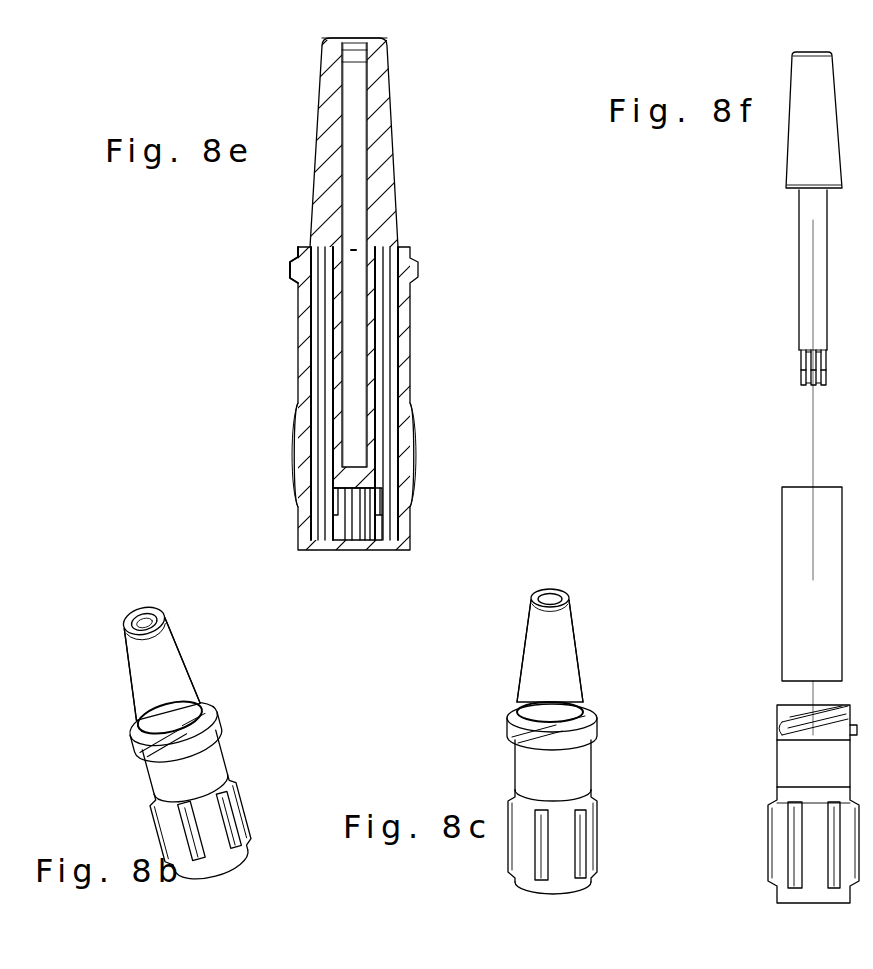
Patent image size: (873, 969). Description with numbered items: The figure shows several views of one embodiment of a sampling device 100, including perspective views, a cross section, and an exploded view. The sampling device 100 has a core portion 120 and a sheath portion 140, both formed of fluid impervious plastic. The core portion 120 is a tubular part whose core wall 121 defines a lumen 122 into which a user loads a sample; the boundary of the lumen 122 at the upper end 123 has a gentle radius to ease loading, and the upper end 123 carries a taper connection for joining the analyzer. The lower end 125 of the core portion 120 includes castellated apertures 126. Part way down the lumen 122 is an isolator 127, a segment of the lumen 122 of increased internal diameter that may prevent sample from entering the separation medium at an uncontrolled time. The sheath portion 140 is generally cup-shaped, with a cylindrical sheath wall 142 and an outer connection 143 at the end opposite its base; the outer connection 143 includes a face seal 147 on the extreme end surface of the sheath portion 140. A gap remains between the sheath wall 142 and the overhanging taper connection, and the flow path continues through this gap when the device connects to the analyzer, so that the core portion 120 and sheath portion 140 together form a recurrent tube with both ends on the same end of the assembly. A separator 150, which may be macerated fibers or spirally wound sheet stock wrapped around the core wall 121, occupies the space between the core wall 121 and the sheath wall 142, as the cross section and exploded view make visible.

In FIG. 8B, the sampling device 100 is at (208, 662).
In FIG. 8F, the core portion 120 is at (780, 224).
In FIG. 8E, the core wall 121 is at (372, 358).
In FIG. 8E, the lumen 122 is at (353, 433).
In FIG. 8C, the upper end 123 is at (551, 592).
In FIG. 8F, the lower end 125 is at (800, 378).
In FIG. 8F, the castellated apertures 126 is at (813, 388).
In FIG. 8E, the isolator 127 is at (352, 475).
In FIG. 8F, the sheath portion 140 is at (763, 766).
In FIG. 8E, the sheath wall 142 is at (410, 293).
In FIG. 8C, the outer connection 143 is at (513, 708).
In FIG. 8E, the face seal 147 is at (300, 248).
In FIG. 8E, the separator 150 is at (300, 407).
In FIG. 8F, the separator 150 is at (797, 603).